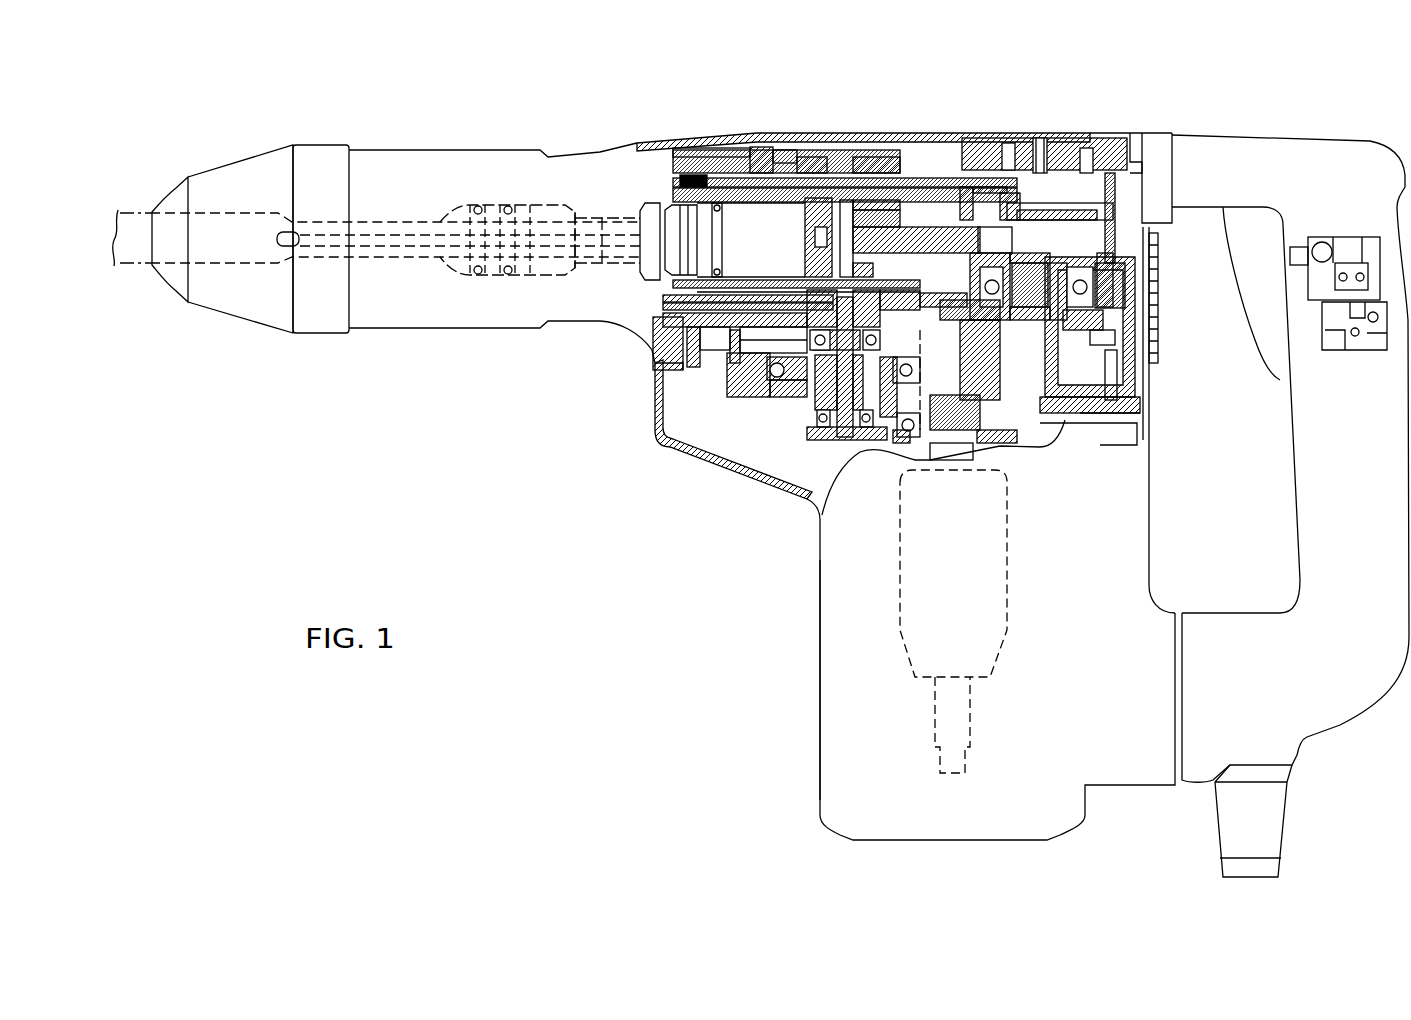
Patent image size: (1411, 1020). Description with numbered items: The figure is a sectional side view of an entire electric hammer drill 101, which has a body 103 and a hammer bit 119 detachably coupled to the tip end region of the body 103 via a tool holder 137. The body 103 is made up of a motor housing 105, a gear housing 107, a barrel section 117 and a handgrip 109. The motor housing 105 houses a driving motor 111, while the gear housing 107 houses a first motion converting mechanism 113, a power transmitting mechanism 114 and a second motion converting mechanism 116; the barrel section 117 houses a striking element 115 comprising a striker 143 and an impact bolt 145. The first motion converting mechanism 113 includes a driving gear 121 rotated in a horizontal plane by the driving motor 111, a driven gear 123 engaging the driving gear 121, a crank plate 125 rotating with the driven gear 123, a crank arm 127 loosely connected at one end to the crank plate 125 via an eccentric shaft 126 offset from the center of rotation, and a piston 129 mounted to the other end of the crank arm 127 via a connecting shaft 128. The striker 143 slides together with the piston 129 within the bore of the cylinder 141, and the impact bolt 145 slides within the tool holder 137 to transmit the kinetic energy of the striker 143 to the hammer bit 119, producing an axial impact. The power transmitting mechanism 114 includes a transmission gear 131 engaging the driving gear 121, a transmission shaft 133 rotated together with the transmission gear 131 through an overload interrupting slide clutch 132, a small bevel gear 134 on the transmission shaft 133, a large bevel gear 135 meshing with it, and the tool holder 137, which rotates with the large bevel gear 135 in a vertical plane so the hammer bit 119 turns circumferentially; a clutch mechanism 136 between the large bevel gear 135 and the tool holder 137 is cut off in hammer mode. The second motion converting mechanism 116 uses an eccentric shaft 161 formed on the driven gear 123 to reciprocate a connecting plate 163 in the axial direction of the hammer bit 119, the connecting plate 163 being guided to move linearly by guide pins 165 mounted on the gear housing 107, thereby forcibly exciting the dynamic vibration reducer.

The electric hammer drill 101 is at (1242, 100).
The body 103 is at (1108, 122).
The motor housing 105 is at (812, 710).
The gear housing 107 is at (927, 128).
The handgrip 109 is at (1302, 130).
The driving motor 111 is at (900, 598).
The first motion converting mechanism 113 is at (1090, 240).
The power transmitting mechanism 114 is at (782, 413).
The striking element 115 is at (577, 200).
The second motion converting mechanism 116 is at (1123, 363).
The barrel section 117 is at (427, 145).
The hammer bit 119 is at (143, 212).
The driving gear 121 is at (925, 440).
The driven gear 123 is at (1068, 330).
The crank plate 125 is at (1030, 225).
The eccentric shaft 126 is at (992, 225).
The crank arm 127 is at (980, 143).
The connecting shaft 128 is at (888, 143).
The piston 129 is at (800, 143).
The transmission gear 131 is at (752, 403).
The overload interrupting slide clutch 132 is at (762, 400).
The transmission shaft 133 is at (843, 428).
The small bevel gear 134 is at (775, 340).
The large bevel gear 135 is at (832, 143).
The clutch mechanism 136 is at (767, 143).
The tool holder 137 is at (690, 143).
The cylinder 141 is at (727, 140).
The striker 143 is at (682, 238).
The impact bolt 145 is at (514, 205).
The eccentric shaft 161 is at (1080, 413).
The connecting plate 163 is at (1110, 345).
The guide pins 165 is at (980, 458).